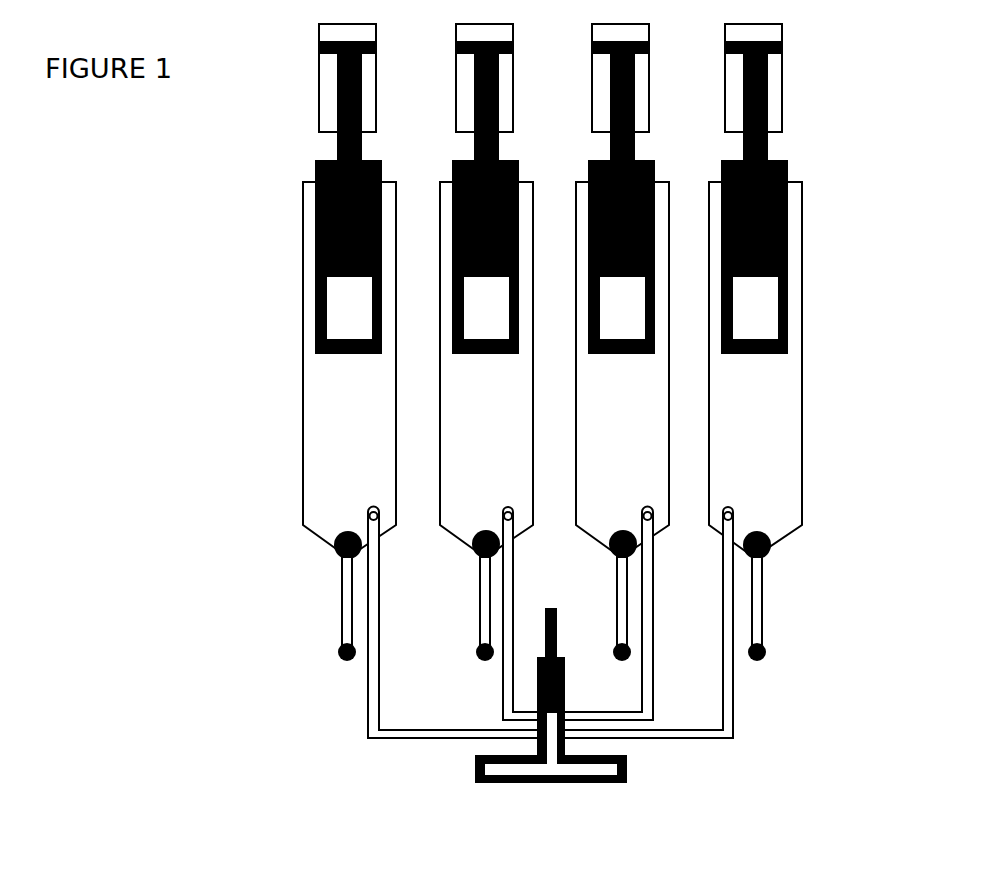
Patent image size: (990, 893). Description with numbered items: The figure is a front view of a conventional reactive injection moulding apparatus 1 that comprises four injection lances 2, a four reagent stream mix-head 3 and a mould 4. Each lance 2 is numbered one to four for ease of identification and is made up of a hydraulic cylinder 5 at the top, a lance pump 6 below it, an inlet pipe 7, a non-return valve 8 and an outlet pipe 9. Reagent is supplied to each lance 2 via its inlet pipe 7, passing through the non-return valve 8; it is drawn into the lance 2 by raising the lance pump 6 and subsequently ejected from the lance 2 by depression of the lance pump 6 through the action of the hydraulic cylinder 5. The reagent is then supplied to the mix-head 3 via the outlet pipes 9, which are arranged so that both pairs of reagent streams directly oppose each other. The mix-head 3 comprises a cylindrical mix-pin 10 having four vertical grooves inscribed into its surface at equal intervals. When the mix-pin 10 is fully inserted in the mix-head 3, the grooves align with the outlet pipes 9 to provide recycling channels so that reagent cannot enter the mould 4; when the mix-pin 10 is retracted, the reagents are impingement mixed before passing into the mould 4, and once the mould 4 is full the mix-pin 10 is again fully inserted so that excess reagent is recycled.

The reactive injection moulding apparatus 1 is at (865, 204).
The injection lance 2 is at (302, 440).
The four reagent stream mix-head 3 is at (565, 685).
The mould 4 is at (613, 783).
The hydraulic cylinder 5 is at (780, 70).
The lance pump 6 is at (789, 222).
The inlet pipe 7 is at (760, 598).
The non-return valve 8 is at (764, 533).
The outlet pipe 9 is at (727, 605).
The mix-pin 10 is at (557, 623).